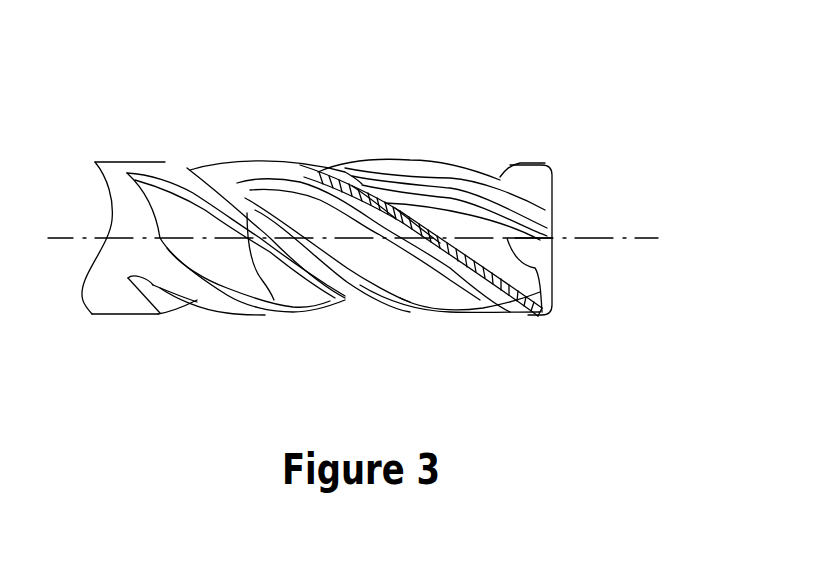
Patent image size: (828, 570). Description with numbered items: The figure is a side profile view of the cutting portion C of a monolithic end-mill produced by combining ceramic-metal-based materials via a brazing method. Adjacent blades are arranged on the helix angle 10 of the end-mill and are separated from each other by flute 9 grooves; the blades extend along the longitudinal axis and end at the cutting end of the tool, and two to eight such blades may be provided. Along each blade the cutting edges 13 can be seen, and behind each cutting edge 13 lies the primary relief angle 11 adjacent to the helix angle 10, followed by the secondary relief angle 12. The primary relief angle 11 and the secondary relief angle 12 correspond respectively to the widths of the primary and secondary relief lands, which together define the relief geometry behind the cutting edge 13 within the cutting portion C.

The cutting portion C is at (202, 111).
The flute 9 is at (498, 251).
The helix angle 10 is at (460, 243).
The primary relief angle 11 is at (417, 212).
The secondary relief angle 12 is at (372, 197).
The cutting edge 13 is at (530, 292).